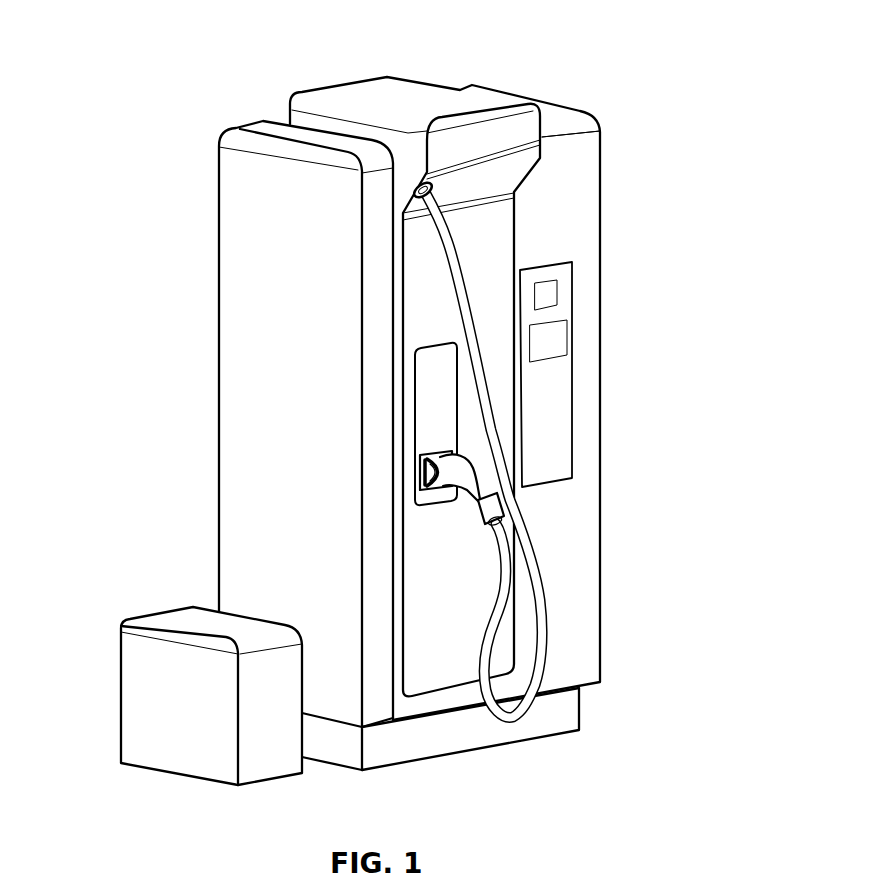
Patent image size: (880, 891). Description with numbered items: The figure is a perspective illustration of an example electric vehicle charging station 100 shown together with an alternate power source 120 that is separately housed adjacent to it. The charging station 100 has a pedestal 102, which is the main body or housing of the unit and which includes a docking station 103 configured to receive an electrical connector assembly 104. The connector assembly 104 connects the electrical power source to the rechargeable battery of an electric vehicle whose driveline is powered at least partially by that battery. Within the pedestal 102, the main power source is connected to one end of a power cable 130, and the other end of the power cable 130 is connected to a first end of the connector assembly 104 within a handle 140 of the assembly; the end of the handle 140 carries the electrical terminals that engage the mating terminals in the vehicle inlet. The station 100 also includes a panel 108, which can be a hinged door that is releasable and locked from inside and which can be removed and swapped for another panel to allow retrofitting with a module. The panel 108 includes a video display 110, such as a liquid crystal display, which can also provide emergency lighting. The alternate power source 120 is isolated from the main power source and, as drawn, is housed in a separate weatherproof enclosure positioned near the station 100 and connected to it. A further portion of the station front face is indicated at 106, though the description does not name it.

The electric vehicle charging station 100 is at (412, 404).
The pedestal 102 is at (598, 202).
The docking station 103 is at (413, 480).
The electrical connector assembly 104 is at (418, 463).
The front panel 106 is at (560, 573).
The panel 108 is at (573, 398).
The video display 110 is at (557, 338).
The alternate power source 120 is at (132, 688).
The power cable 130 is at (445, 238).
The handle 140 is at (458, 473).